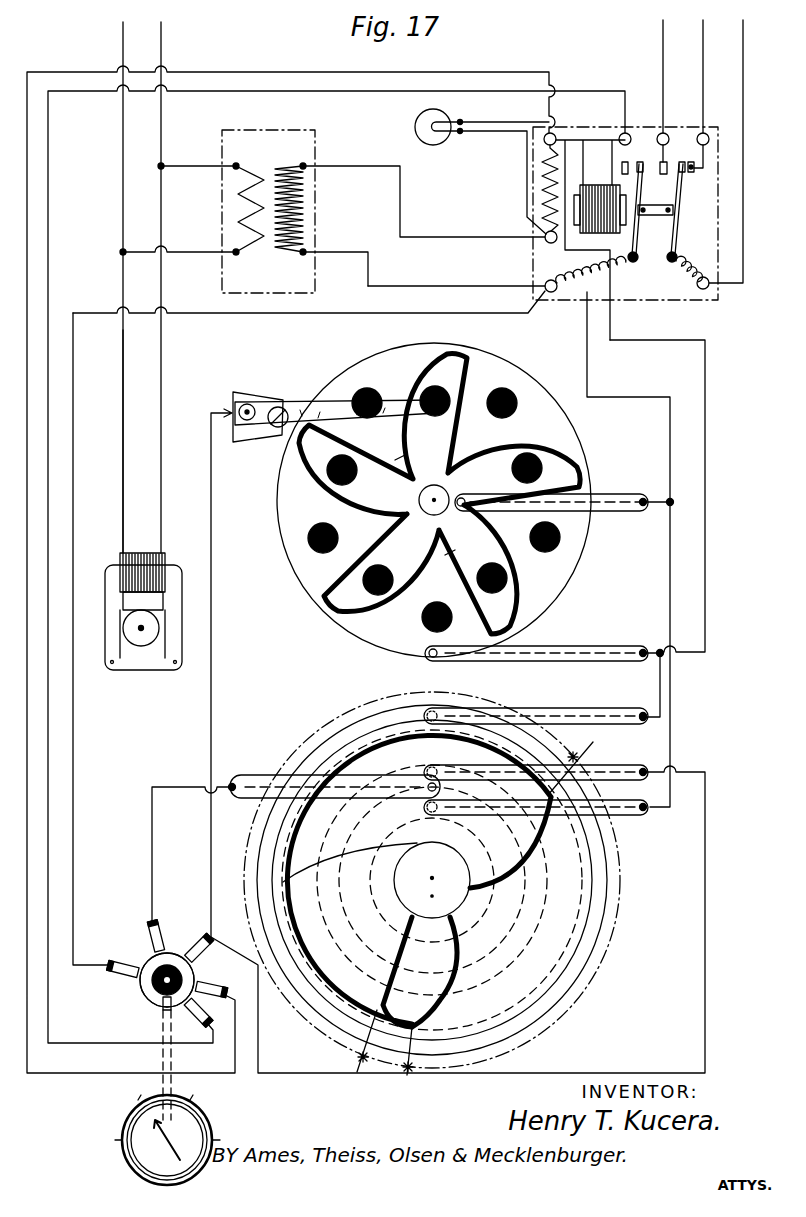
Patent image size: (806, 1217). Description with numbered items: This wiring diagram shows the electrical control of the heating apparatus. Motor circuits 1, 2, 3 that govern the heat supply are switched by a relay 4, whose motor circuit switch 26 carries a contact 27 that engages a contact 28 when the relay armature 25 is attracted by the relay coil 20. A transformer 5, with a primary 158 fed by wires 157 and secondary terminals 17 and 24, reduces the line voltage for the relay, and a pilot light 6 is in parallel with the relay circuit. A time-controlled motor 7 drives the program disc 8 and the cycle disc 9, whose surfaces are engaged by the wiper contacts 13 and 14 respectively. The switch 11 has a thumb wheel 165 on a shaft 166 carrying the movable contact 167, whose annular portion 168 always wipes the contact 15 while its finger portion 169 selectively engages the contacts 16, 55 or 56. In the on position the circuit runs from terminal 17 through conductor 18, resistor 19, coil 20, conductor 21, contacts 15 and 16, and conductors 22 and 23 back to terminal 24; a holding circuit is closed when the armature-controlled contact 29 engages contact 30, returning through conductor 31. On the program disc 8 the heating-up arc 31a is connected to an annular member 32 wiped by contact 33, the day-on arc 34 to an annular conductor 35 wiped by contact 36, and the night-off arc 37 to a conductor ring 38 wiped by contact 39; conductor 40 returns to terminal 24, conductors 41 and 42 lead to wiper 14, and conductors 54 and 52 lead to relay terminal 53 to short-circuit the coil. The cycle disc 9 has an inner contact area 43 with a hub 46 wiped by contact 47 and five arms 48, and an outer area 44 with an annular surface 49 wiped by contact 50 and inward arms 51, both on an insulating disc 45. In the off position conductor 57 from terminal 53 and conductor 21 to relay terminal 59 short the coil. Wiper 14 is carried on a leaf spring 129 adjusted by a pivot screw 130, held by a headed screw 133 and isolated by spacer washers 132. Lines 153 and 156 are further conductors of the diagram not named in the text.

The motor circuit 1 is at (745, 40).
The motor circuit 2 is at (706, 40).
The motor circuit 3 is at (665, 40).
The relay 4 is at (682, 305).
The transformer 5 is at (325, 200).
The pilot light 6 is at (445, 142).
The time-controlled motor 7 is at (174, 560).
The program circuit-controlling disc 8 is at (608, 886).
The cycle circuit-controlling disc 9 is at (592, 450).
The switch 11 is at (147, 1002).
The wiper contact 13 is at (430, 783).
The wiper contact 14 is at (393, 400).
The switch contact 15 is at (204, 1032).
The switch contact 16 is at (120, 964).
The transformer secondary terminal 17 is at (305, 167).
The conductor 18 is at (406, 207).
The resistor 19 is at (545, 184).
The relay coil 20 is at (591, 240).
The conductor 21 is at (353, 92).
The conductor 22 is at (430, 313).
The conductor 23 is at (420, 286).
The transformer terminal 24 is at (305, 252).
The relay armature 25 is at (638, 230).
The motor circuit switch 26 is at (679, 212).
The contact 27 is at (680, 160).
The contact 28 is at (655, 198).
The armature-controlled contact 29 is at (638, 160).
The contact 30 is at (620, 168).
The conductor 31 is at (630, 270).
The heating-up contact surface 31a is at (475, 921).
The annular contact member 32 is at (376, 868).
The wiper contact 33 is at (633, 812).
The day-on contact area 34 is at (312, 740).
The annular conductor 35 is at (630, 862).
The contact wiper 36 is at (627, 765).
The night-off contact area 37 is at (610, 930).
The conductor ring 38 is at (423, 703).
The contact wiper 39 is at (579, 710).
The conductor 40 is at (590, 374).
The conductor 41 is at (563, 1072).
The conductor 42 is at (213, 638).
The inner contact area 43 is at (561, 482).
The outer contact area 44 is at (570, 427).
The insulating disc 45 is at (470, 366).
The central hub portion 46 is at (450, 467).
The wiper contact 47 is at (606, 514).
The arms 48 is at (335, 497).
The outer annular contact surface 49 is at (505, 647).
The wiper contact 50 is at (545, 660).
The arms 51 is at (383, 527).
The conductor 52 is at (712, 440).
The terminal 53 is at (556, 134).
The conductor 54 is at (662, 683).
The switch contact 55 is at (212, 953).
The switch contact 56 is at (224, 984).
The conductor 57 is at (392, 72).
The relay terminal 59 is at (625, 133).
The leaf spring member 129 is at (328, 400).
The pivot screw 130 is at (327, 410).
The spacer washers 132 is at (264, 438).
The headed screw 133 is at (232, 410).
The conductors 153 is at (158, 38).
The conductor 156 is at (123, 374).
The wires 157 is at (193, 165).
The primary 158 is at (240, 212).
The thumb wheel 165 is at (204, 1158).
The shaft 166 is at (162, 1058).
The movable switch contact 167 is at (133, 986).
The annular conductor portion 168 is at (160, 1010).
The projecting finger portion 169 is at (170, 946).